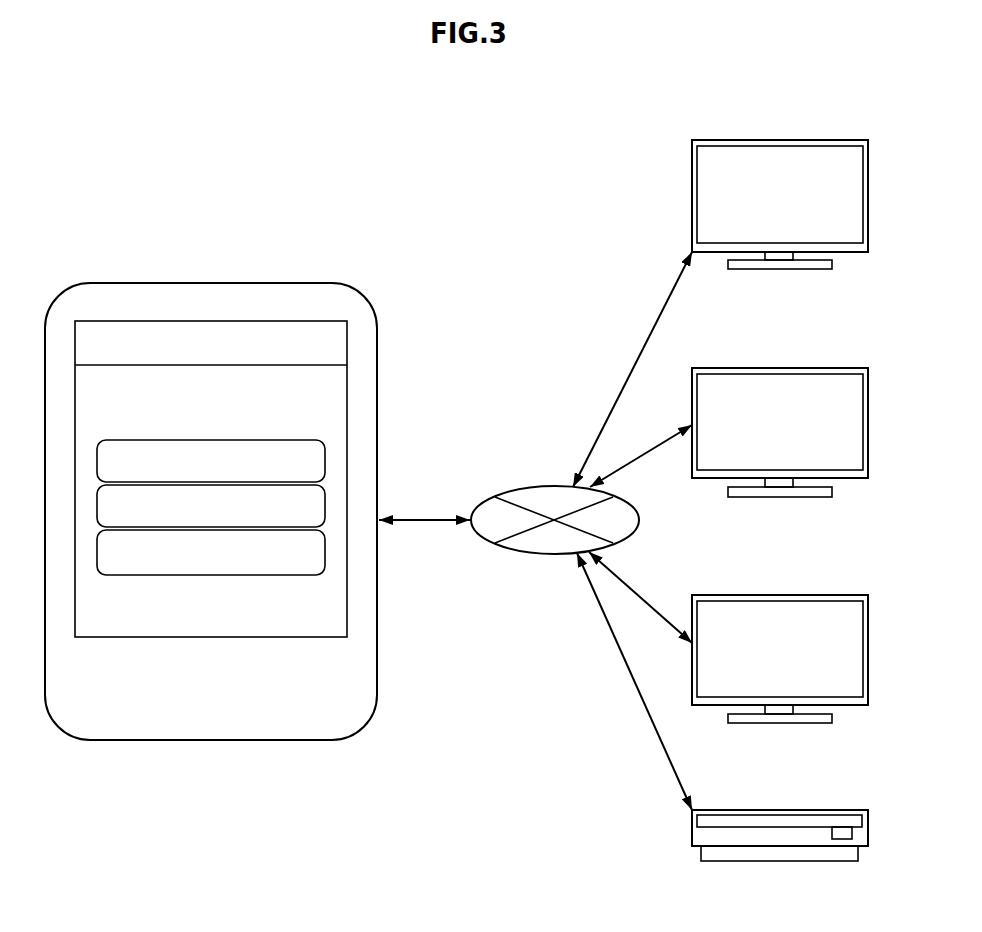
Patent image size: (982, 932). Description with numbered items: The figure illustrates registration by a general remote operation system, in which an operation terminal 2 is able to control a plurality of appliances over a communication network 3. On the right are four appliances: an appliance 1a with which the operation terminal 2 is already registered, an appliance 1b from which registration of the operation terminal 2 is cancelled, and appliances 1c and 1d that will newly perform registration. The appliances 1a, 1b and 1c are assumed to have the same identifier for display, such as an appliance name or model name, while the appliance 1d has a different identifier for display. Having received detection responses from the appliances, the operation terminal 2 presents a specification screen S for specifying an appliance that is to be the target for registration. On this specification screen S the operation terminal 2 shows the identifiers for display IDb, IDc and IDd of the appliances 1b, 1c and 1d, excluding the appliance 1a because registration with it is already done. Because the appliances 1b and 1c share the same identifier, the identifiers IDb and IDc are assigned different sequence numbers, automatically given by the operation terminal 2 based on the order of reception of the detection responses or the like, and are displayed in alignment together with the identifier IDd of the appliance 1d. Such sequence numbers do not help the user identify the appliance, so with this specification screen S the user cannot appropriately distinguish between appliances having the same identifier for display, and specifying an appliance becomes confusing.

The operation terminal 2 is at (245, 283).
The specification screen S is at (334, 392).
The identifier for display of appliance 1b IDb is at (325, 455).
The identifier for display of appliance 1c IDc is at (325, 496).
The identifier for display of appliance 1d IDd is at (325, 548).
The network 3 is at (515, 489).
The appliance 1a is at (832, 140).
The appliance 1b is at (832, 368).
The appliance 1c is at (832, 595).
The appliance 1d is at (832, 810).